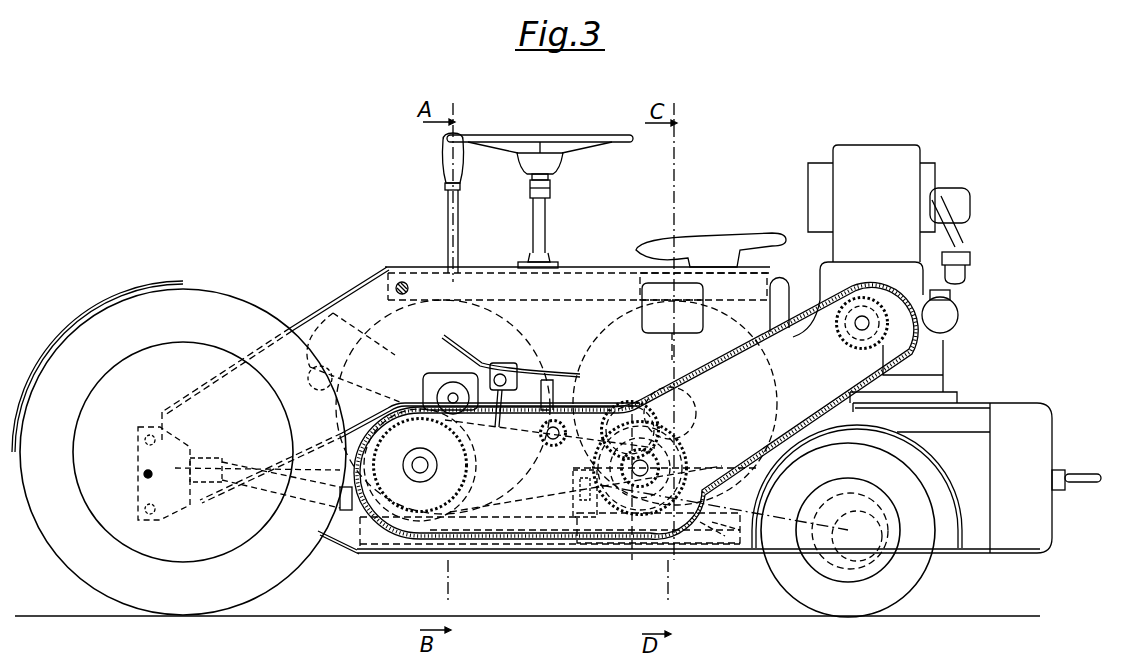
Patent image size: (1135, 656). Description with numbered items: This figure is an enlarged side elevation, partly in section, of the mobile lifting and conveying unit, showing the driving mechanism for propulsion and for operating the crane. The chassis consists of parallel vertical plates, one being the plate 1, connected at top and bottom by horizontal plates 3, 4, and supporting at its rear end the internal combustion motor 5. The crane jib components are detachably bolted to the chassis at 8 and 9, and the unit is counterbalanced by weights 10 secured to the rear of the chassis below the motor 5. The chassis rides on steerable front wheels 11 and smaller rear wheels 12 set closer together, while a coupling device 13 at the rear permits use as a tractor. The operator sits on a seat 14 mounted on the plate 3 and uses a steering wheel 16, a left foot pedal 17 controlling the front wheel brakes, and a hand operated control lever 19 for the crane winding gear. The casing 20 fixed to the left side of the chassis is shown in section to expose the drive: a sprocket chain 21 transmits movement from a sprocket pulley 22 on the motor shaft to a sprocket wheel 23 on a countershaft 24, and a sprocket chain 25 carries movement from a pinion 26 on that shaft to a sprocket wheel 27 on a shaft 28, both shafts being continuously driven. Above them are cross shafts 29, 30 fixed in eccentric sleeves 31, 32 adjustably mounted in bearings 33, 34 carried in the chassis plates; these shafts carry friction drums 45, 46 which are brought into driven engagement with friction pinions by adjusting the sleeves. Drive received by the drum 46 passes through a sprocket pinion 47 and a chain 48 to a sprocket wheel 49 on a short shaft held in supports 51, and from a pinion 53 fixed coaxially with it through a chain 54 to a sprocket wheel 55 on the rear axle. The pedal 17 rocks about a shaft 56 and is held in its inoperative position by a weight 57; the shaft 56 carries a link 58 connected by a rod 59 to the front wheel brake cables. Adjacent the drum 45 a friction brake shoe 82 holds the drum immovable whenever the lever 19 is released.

The vertical plate 1 is at (368, 297).
The horizontal plate 3 is at (575, 270).
The horizontal plate 4 is at (540, 546).
The internal combustion motor 5 is at (903, 158).
The bolt 8 is at (146, 476).
The bolt 9 is at (400, 281).
The counterbalance weight 10 is at (1026, 417).
The front wheel 11 is at (57, 538).
The rear wheel 12 is at (910, 577).
The coupling device 13 is at (1084, 477).
The seat 14 is at (720, 232).
The steering wheel 16 is at (523, 137).
The left foot pedal 17 is at (446, 337).
The hand operated control lever 19 is at (443, 160).
The casing 20 is at (780, 292).
The sprocket chain 21 is at (808, 446).
The sprocket pulley 22 is at (915, 346).
The sprocket wheel 23 is at (568, 430).
The countershaft 24 is at (631, 478).
The sprocket chain 25 is at (500, 512).
The pinion 26 is at (700, 430).
The sprocket wheel 27 is at (418, 523).
The shaft 28 is at (414, 462).
The cross shaft 29 is at (430, 392).
The cross shaft 30 is at (702, 404).
The eccentric sleeve 31 is at (447, 393).
The eccentric sleeve 32 is at (682, 334).
The bearing 33 is at (427, 398).
The bearing 34 is at (638, 398).
The friction drum 45 is at (523, 347).
The friction drum 46 is at (703, 288).
The sprocket pinion 47 is at (667, 386).
The chain 48 is at (712, 443).
The sprocket wheel 49 is at (700, 528).
The support 51 is at (566, 518).
The pinion 53 is at (668, 512).
The chain 54 is at (722, 542).
The sprocket wheel 55 is at (862, 568).
The shaft 56 is at (499, 372).
The weight 57 is at (547, 374).
The link 58 is at (497, 429).
The rod 59 is at (420, 447).
The friction brake shoe 82 is at (326, 307).